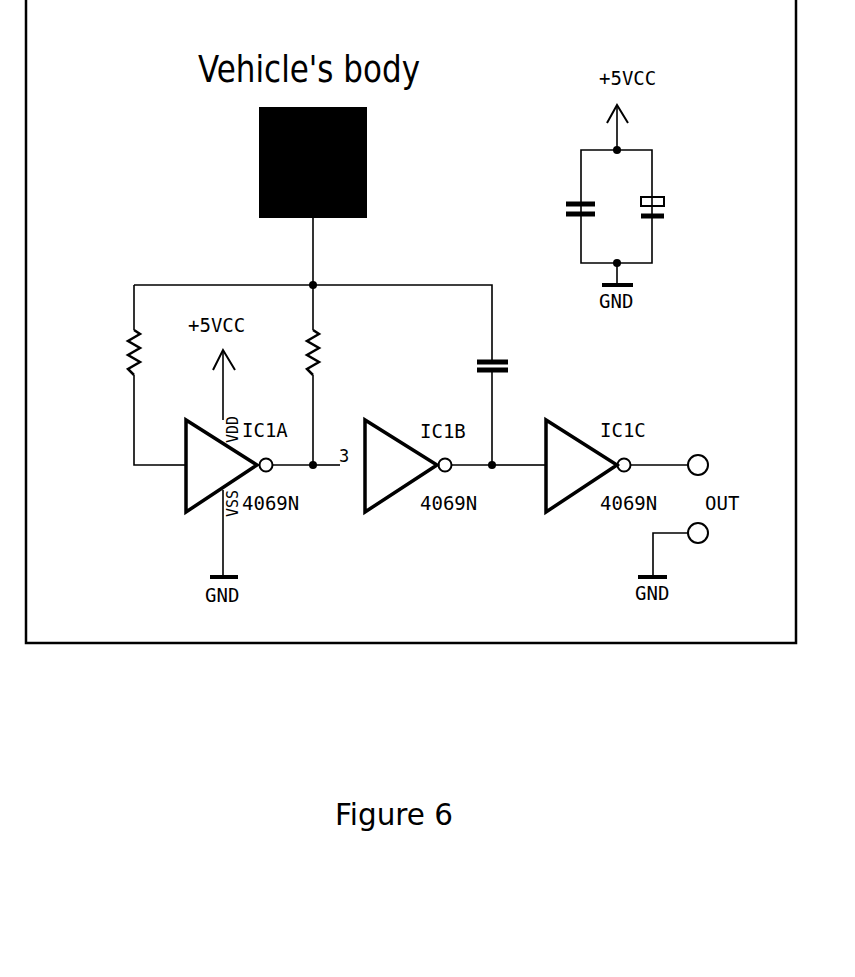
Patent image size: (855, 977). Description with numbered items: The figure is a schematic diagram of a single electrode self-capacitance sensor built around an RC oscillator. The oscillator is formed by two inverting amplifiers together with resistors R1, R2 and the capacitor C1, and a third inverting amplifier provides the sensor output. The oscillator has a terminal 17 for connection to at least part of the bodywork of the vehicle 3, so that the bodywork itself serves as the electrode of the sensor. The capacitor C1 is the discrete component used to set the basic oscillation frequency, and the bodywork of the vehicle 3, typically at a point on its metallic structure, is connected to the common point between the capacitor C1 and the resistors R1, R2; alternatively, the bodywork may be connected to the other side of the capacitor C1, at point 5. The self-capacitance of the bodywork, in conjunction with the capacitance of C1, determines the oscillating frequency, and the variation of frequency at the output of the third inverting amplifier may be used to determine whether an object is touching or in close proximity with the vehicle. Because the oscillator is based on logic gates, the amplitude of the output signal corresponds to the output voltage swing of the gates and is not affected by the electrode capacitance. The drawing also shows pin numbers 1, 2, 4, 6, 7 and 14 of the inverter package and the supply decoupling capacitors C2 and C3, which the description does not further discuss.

The vehicle 3 is at (373, 178).
The terminal 17 is at (318, 268).
The resistor R1 is at (105, 349).
The resistor R2 is at (293, 349).
The capacitor C1 is at (468, 341).
The capacitor 100nF C2 is at (607, 209).
The capacitor 1uF C3 is at (667, 209).
The inverter IC1A input pin 1 is at (172, 457).
The inverter IC1A output pin 2 is at (292, 457).
The inverter IC1B output pin 4 is at (472, 456).
The point 5 is at (531, 456).
The inverter IC1C output pin 6 is at (659, 456).
The VSS pin 7 is at (213, 538).
The VDD pin 14 is at (218, 411).